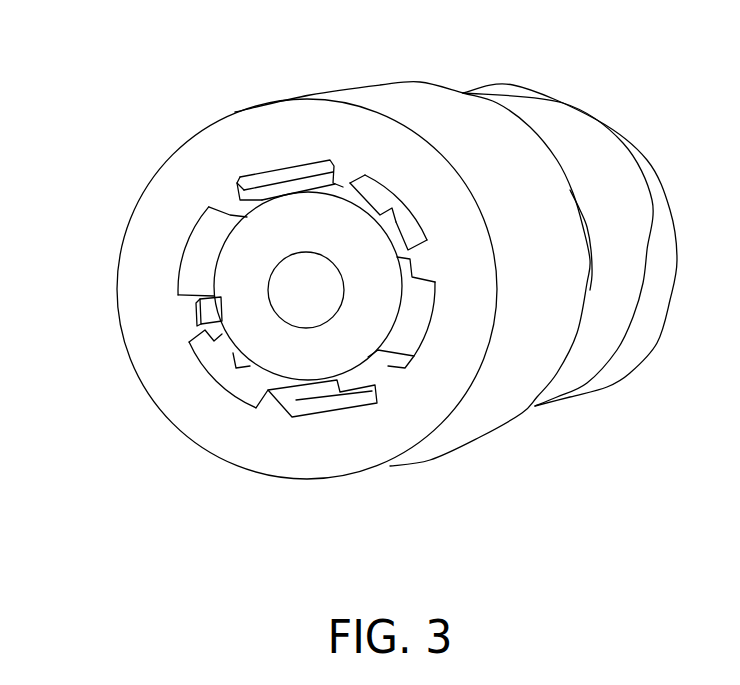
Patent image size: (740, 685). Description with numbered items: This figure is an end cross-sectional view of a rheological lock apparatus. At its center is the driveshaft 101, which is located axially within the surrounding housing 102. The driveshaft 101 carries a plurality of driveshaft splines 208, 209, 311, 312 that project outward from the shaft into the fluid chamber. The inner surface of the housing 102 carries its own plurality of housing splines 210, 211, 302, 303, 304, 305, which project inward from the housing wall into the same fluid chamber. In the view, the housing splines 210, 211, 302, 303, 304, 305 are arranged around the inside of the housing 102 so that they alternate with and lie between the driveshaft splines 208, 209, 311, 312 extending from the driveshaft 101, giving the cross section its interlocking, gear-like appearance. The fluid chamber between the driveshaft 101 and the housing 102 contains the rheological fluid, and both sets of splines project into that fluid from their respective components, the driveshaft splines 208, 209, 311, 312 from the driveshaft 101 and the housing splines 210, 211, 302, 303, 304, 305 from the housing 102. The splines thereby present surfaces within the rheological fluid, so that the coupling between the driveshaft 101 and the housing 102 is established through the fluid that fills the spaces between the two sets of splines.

The driveshaft 101 is at (305, 357).
The housing 102 is at (250, 133).
The driveshaft spline 208 is at (220, 340).
The driveshaft spline 209 is at (390, 237).
The housing spline 210 is at (272, 405).
The housing spline 211 is at (348, 168).
The housing spline 302 is at (430, 262).
The housing spline 303 is at (397, 387).
The housing spline 304 is at (183, 316).
The housing spline 305 is at (222, 195).
The driveshaft spline 311 is at (355, 368).
The driveshaft spline 312 is at (263, 198).